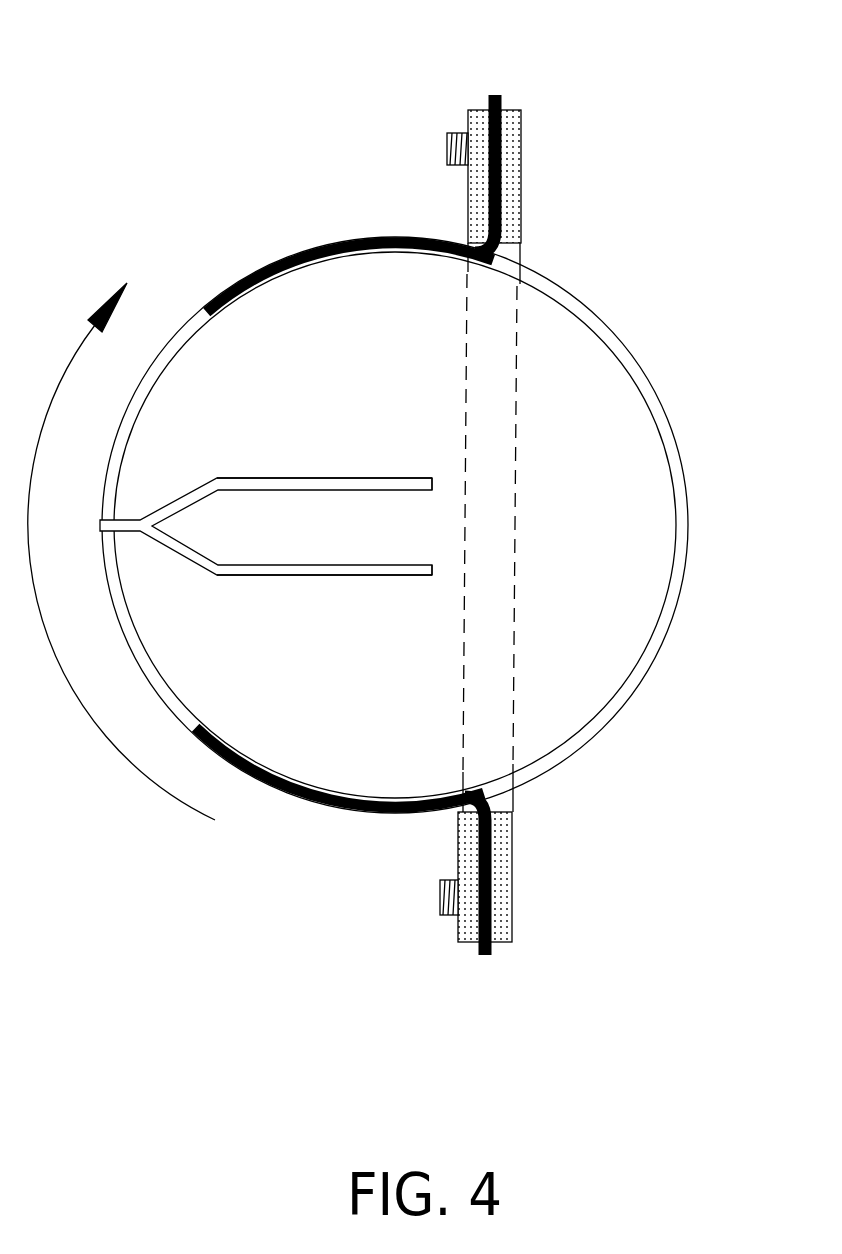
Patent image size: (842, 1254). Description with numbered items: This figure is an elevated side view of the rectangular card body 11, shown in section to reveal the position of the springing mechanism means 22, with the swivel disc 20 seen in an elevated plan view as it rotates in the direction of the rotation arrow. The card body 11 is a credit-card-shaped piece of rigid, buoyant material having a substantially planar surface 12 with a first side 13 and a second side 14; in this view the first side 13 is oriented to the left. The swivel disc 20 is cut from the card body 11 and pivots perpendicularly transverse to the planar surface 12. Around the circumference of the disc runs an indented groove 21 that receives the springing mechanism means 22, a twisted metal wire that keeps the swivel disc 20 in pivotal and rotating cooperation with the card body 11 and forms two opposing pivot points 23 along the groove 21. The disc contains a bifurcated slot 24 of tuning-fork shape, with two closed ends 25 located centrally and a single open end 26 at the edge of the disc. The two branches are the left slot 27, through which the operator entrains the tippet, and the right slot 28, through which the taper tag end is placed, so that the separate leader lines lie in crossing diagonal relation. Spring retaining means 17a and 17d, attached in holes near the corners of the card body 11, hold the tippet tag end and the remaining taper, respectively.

The rectangular card body 11 is at (518, 110).
The planar surface 12 is at (514, 390).
The first side 13 is at (462, 672).
The second side 14 is at (517, 638).
The retaining means 17a is at (445, 143).
The retaining means 17d is at (432, 898).
The swivel disc 20 is at (590, 523).
The indented groove 21 is at (660, 402).
The springing mechanism means 22 is at (303, 253).
The opposing pivot points 23 is at (512, 795).
The bifurcated slot 24 is at (305, 417).
The closed ends 25 is at (403, 565).
The single open end 26 is at (100, 525).
The left slot 27 is at (270, 483).
The right slot 28 is at (280, 572).